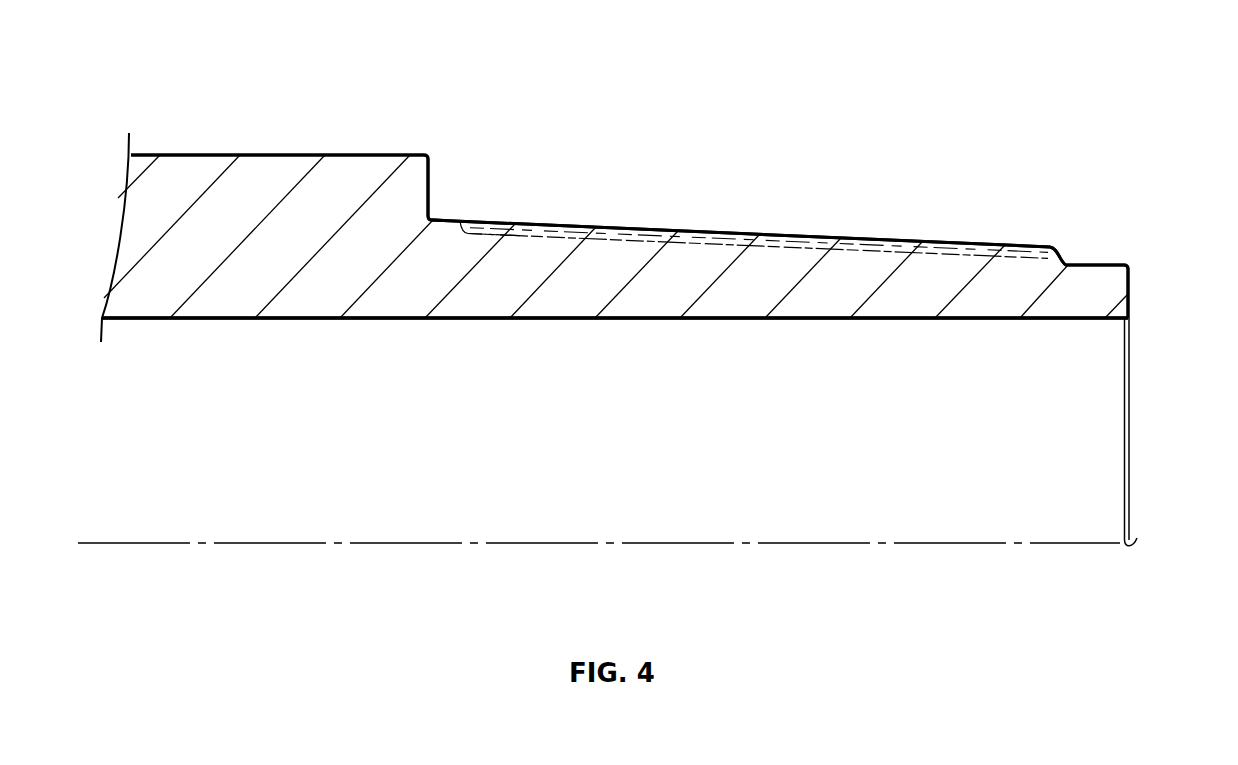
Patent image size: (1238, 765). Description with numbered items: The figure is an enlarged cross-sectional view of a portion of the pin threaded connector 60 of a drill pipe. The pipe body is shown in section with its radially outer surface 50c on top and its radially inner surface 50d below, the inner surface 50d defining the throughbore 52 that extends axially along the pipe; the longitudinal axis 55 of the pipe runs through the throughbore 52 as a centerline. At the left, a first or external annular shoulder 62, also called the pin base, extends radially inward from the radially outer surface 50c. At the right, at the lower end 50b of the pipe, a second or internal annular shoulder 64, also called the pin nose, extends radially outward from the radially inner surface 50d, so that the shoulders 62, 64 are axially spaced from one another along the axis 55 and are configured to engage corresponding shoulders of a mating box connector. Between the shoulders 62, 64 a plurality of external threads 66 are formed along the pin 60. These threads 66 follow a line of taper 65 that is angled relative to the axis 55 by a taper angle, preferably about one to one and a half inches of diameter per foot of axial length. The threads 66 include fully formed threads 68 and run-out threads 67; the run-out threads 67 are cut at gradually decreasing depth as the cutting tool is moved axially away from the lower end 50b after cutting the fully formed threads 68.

The pin threaded connector 60 is at (454, 78).
The radially outer surface 50c is at (205, 155).
The external annular shoulder 62 is at (436, 181).
The external threads 66 is at (1057, 238).
The run-out threads 67 is at (506, 229).
The fully formed threads 68 is at (678, 246).
The line of taper 65 is at (722, 238).
The internal annular shoulder 64 is at (1130, 283).
The radially inner surface 50d is at (297, 319).
The lower end 50b is at (1132, 407).
The throughbore 52 is at (212, 469).
The longitudinal axis 55 is at (402, 543).